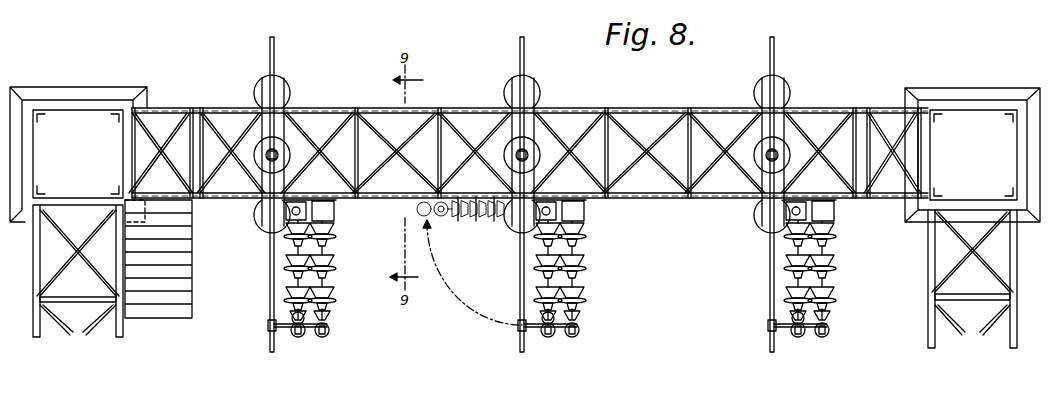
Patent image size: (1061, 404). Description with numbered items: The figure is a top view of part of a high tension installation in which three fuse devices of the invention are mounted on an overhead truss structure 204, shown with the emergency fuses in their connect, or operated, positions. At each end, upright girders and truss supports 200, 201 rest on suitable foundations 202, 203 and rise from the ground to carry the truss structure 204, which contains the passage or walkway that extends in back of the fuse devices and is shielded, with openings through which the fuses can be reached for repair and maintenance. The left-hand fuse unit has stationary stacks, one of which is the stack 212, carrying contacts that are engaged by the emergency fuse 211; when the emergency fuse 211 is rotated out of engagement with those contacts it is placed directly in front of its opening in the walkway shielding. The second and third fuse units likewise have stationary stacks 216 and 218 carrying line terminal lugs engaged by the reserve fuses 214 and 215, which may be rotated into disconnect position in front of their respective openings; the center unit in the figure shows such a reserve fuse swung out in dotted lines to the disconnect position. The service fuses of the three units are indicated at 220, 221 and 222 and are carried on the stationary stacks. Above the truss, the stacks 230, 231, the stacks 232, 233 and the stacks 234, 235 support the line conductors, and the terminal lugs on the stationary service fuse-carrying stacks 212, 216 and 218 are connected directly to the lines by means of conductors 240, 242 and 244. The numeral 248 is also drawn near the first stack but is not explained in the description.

The upright girder 200 is at (62, 112).
The upright girder 201 is at (946, 110).
The foundation 202 is at (116, 92).
The foundation 203 is at (995, 95).
The overhead truss structure 204 is at (668, 108).
The emergency fuse 211 is at (297, 337).
The stationary stack 212 is at (305, 273).
The reserve fuse 214 is at (562, 338).
The reserve fuse 215 is at (807, 339).
The stationary stack 216 is at (583, 273).
The stationary stack 218 is at (833, 273).
The service fuse 220 is at (329, 333).
The service fuse 221 is at (596, 335).
The service fuse 222 is at (843, 335).
The line conductor stack 230 is at (279, 142).
The line conductor stack 231 is at (266, 233).
The line conductor stack 232 is at (541, 131).
The line conductor stack 233 is at (514, 234).
The line conductor stack 234 is at (791, 131).
The line conductor stack 235 is at (758, 230).
The conductor 240 is at (327, 322).
The conductor 242 is at (567, 319).
The conductor 244 is at (817, 319).
The insulator disc 248 is at (286, 288).